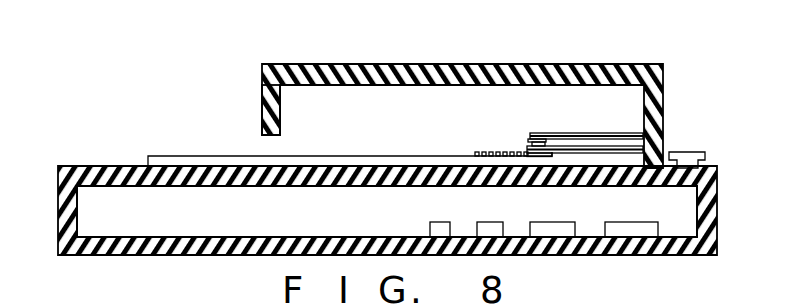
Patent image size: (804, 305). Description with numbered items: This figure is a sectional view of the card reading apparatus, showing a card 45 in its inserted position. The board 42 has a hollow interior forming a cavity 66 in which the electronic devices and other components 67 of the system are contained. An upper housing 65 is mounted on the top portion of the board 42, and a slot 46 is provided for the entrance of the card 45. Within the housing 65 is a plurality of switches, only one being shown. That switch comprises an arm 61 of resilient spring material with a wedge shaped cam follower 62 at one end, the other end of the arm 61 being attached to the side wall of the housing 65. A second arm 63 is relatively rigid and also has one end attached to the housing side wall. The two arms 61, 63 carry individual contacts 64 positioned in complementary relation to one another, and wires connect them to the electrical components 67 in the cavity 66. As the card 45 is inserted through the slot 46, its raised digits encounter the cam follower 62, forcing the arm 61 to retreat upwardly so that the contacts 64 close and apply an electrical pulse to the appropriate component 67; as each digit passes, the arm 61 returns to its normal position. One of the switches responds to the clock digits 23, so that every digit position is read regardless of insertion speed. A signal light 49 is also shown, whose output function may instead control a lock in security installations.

The board 42 is at (67, 219).
The cavity 66 is at (240, 224).
The electronic components 67 is at (490, 230).
The card 45 is at (320, 165).
The clock digits 23 is at (483, 152).
The upper housing 65 is at (352, 72).
The slot 46 is at (262, 112).
The second arm 63 is at (586, 133).
The contacts 64 is at (530, 143).
The arm 61 is at (592, 153).
The cam follower 62 is at (540, 154).
The signal light 49 is at (690, 158).